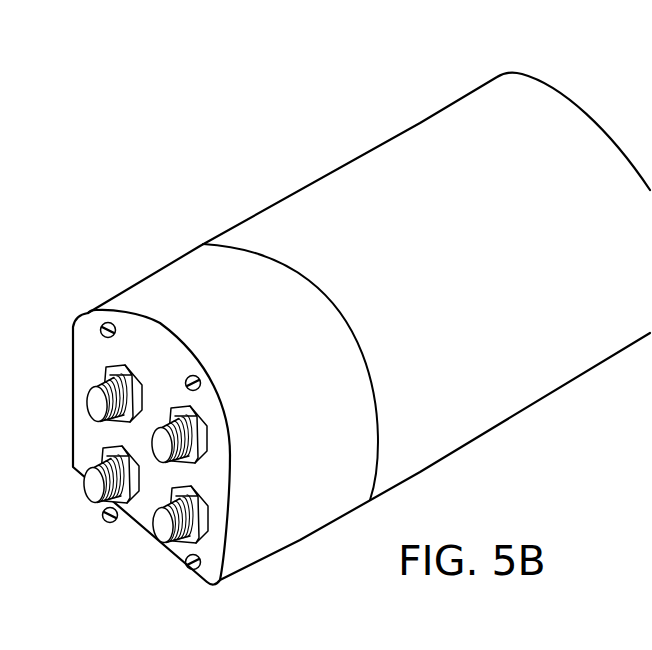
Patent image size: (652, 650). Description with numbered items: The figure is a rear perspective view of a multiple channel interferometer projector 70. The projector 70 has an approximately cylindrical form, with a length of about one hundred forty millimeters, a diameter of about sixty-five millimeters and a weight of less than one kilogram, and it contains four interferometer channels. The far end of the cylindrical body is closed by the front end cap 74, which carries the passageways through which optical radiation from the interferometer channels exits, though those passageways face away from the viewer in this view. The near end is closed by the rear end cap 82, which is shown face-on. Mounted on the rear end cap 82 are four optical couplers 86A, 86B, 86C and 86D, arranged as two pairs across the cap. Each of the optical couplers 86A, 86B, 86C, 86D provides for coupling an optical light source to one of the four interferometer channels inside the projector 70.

The multiple channel interferometer projector 70 is at (361, 129).
The front end cap 74 is at (550, 95).
The rear end cap 82 is at (187, 268).
The optical coupler 86A is at (160, 457).
The optical coupler 86B is at (165, 530).
The optical coupler 86C is at (88, 403).
The optical coupler 86D is at (97, 492).